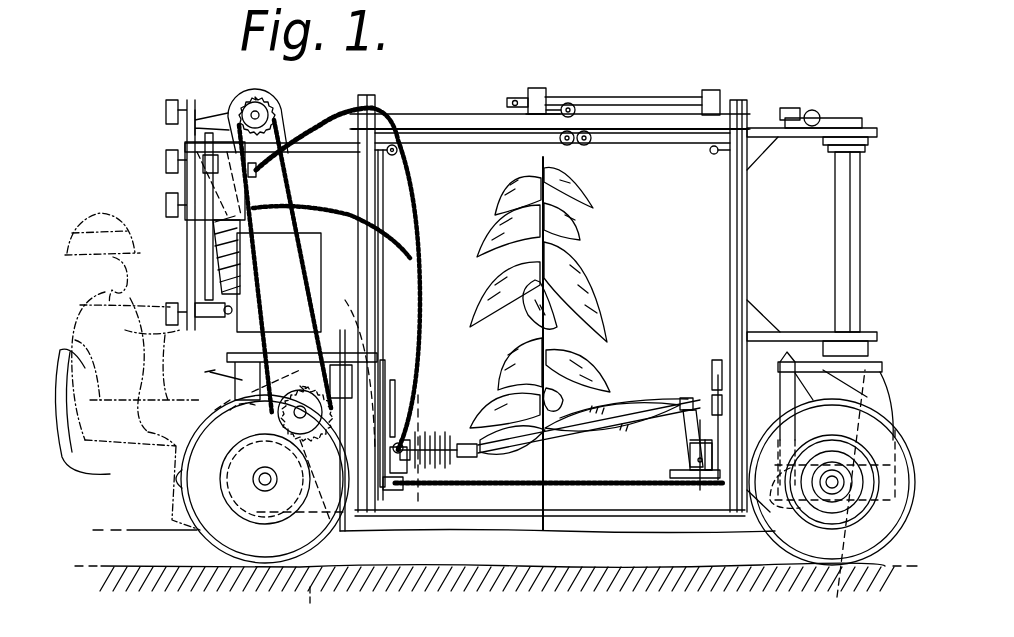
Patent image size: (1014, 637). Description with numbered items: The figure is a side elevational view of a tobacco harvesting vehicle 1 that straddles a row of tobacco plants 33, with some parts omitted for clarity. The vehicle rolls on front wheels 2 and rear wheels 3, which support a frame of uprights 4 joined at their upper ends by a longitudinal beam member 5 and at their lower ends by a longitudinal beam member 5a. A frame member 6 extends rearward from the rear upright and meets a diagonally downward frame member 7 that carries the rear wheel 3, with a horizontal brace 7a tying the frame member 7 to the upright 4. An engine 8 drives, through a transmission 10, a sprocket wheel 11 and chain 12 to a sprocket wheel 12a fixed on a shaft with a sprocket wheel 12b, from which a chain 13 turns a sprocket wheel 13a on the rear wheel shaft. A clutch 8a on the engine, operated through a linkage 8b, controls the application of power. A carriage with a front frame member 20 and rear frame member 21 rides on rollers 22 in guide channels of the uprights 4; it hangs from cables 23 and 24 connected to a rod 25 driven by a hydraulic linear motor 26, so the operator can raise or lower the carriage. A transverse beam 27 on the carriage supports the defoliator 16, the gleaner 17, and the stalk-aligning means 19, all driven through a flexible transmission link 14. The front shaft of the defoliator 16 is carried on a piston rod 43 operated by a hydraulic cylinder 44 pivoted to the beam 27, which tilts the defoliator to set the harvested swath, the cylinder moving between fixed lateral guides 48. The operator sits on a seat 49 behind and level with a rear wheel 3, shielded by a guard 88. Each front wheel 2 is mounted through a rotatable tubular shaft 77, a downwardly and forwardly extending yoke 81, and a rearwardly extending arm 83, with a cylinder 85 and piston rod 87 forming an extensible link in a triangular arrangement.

The vehicle 1 is at (772, 76).
The front wheel 2 is at (872, 541).
The rear wheel 3 is at (210, 514).
The upright 4 is at (358, 191).
The longitudinal beam member 5 is at (482, 114).
The longitudinal beam member 5a is at (645, 532).
The frame member 6 is at (296, 128).
The frame member 7 is at (230, 252).
The horizontal brace 7a is at (338, 397).
The engine 8 is at (282, 280).
The clutch 8a is at (205, 325).
The linkage 8b is at (200, 212).
The transmission 10 is at (185, 185).
The sprocket wheel 11 is at (258, 112).
The chain 12 is at (290, 172).
The sprocket wheel 12a is at (300, 390).
The sprocket wheel 12b is at (234, 385).
The chain 13 is at (430, 412).
The sprocket wheel 13a is at (318, 606).
The flexible transmission link 14 is at (392, 243).
The defoliator 16 is at (623, 402).
The gleaner 17 is at (442, 457).
The stalk-aligning means 19 is at (618, 488).
The front frame member 20 is at (712, 380).
The rear frame member 21 is at (390, 360).
The roller 22 is at (365, 340).
The cable 23 is at (460, 146).
The cable 24 is at (634, 146).
The rod 25 is at (521, 98).
The hydraulic linear motor 26 is at (605, 96).
The transverse beam 27 is at (720, 452).
The tobacco plant 33 is at (540, 332).
The piston rod 43 is at (688, 413).
The hydraulic cylinder 44 is at (684, 412).
The lateral guide 48 is at (690, 459).
The seat 49 is at (110, 494).
The tubular shaft 77 is at (852, 291).
The yoke 81 is at (868, 389).
The arm 83 is at (848, 498).
The cylinder 85 is at (803, 418).
The piston rod 87 is at (775, 488).
The guard 88 is at (232, 410).